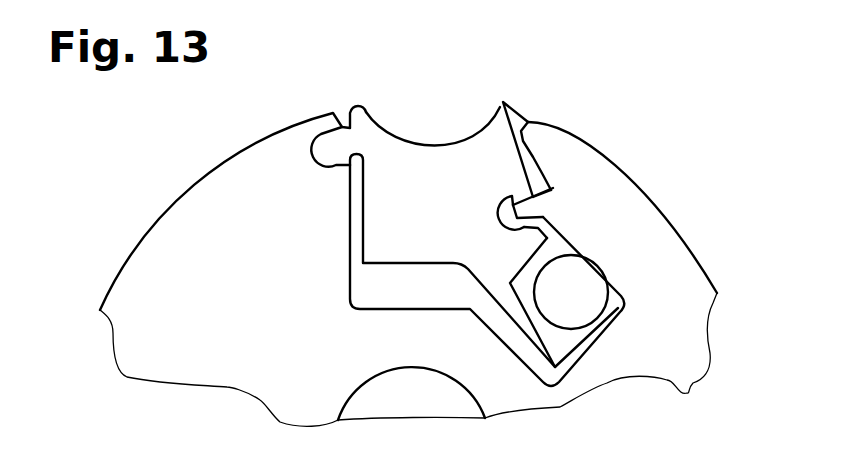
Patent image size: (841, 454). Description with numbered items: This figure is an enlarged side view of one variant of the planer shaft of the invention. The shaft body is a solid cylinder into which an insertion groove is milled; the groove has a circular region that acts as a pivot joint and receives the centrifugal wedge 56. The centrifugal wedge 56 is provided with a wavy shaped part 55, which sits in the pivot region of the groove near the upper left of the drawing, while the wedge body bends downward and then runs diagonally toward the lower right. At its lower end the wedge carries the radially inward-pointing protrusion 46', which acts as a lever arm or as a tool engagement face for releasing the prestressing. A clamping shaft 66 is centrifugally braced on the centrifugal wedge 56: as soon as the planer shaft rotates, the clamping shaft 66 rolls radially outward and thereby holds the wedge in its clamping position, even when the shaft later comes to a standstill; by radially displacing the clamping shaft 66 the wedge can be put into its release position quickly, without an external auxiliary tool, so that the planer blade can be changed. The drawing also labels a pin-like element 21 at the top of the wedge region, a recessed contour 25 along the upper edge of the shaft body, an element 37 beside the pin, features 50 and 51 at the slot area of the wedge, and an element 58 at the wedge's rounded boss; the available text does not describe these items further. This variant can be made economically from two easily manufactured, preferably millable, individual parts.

The pin 21 is at (521, 112).
The recess 25 is at (412, 143).
The contoured edge of pin 37 is at (535, 146).
The radially inward-pointing protrusion 46' is at (585, 337).
The slot upper edge 50 is at (547, 190).
The slot 51 is at (534, 210).
The wavy shaped part 55 is at (326, 156).
The centrifugal wedge 56 is at (487, 270).
The boss 58 is at (503, 193).
The clamping shaft 66 is at (583, 275).